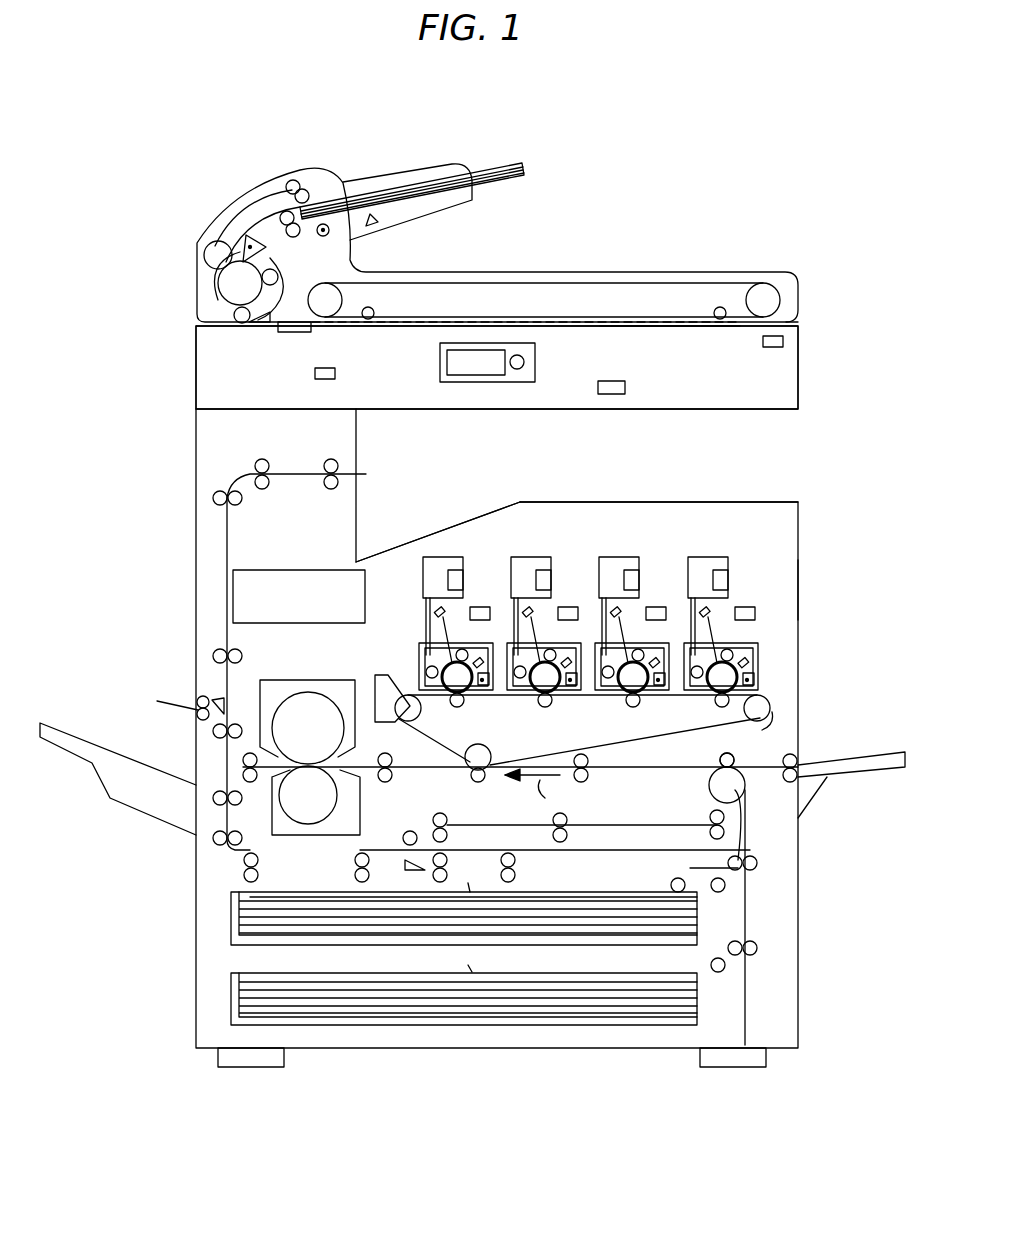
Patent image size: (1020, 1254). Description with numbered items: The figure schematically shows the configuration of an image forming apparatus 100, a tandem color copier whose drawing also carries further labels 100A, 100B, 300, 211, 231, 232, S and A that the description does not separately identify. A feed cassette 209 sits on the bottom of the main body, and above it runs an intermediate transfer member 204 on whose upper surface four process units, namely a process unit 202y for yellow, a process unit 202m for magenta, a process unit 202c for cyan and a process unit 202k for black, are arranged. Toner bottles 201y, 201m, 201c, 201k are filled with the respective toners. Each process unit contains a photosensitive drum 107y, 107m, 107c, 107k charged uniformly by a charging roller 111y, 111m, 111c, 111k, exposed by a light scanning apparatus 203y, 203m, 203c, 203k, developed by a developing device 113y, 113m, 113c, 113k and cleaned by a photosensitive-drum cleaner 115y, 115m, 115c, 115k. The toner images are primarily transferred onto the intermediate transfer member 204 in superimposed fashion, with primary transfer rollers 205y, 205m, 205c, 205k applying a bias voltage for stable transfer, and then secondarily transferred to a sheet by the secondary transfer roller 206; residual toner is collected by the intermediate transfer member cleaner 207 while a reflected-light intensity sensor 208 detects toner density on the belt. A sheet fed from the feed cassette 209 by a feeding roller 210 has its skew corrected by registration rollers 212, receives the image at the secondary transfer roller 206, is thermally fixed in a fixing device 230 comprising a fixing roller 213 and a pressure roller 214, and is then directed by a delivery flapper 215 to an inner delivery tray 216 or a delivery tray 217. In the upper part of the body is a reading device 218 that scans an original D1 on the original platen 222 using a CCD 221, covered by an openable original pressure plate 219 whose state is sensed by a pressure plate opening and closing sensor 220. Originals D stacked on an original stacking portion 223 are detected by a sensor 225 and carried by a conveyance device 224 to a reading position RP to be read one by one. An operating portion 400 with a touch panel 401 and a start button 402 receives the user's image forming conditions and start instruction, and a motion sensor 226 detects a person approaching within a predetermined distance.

The image forming apparatus 100 is at (738, 220).
The image forming unit 100A is at (798, 520).
The image forming unit 100B is at (785, 578).
The reading device 218 is at (798, 386).
The conveyance device 224 is at (205, 215).
The original stacking portion 223 is at (466, 165).
The originals D is at (425, 185).
The sensor 225 is at (372, 222).
The original D1 is at (465, 320).
The reading position RP is at (320, 338).
The original pressure plate 219 is at (798, 322).
The pressure plate opening and closing sensor 220 is at (783, 342).
The CCD 221 is at (320, 373).
The original platen 222 is at (662, 328).
The motion sensor 226 is at (615, 394).
The operating portion 400 is at (440, 362).
The touch panel 401 is at (480, 376).
The start button 402 is at (524, 361).
The controller unit 300 is at (275, 568).
The inner delivery tray 216 is at (418, 540).
The delivery flapper 215 is at (222, 700).
The fixing device 230 is at (312, 678).
The fixing roller 213 is at (300, 700).
The pressure roller 214 is at (330, 808).
The intermediate transfer member cleaner 207 is at (385, 672).
The intermediate transfer member 204 is at (412, 720).
The secondary transfer roller 206 is at (470, 760).
The reflected-light intensity sensor 208 is at (770, 706).
The registration rollers 212 is at (588, 768).
The discharge roller 232 is at (797, 760).
The discharge tray 211 is at (850, 770).
The delivery tray 217 is at (152, 815).
The feeding roller 210 is at (670, 885).
The feed cassette 209 is at (231, 922).
The sheet S is at (473, 921).
The conveyance roller 231 is at (735, 768).
The rotation direction A is at (532, 791).
The toner bottle 201y is at (423, 578).
The toner bottle 201m is at (520, 557).
The toner bottle 201c is at (610, 557).
The toner bottle 201k is at (710, 557).
The process unit 202y is at (419, 668).
The process unit 202m is at (578, 640).
The process unit 202c is at (666, 640).
The process unit 202k is at (758, 650).
The light scanning apparatus 203y is at (480, 605).
The light scanning apparatus 203m is at (568, 605).
The light scanning apparatus 203c is at (656, 605).
The light scanning apparatus 203k is at (755, 613).
The charging roller 111y is at (460, 660).
The charging roller 111m is at (548, 660).
The charging roller 111c is at (636, 660).
The charging roller 111k is at (727, 660).
The photosensitive drum 107y is at (480, 643).
The photosensitive drum 107m is at (565, 643).
The photosensitive drum 107c is at (655, 643).
The photosensitive drum 107k is at (745, 643).
The developing device 113y is at (434, 680).
The developing device 113m is at (523, 680).
The developing device 113c is at (611, 680).
The developing device 113k is at (700, 680).
The photosensitive-drum cleaner 115y is at (485, 688).
The photosensitive-drum cleaner 115m is at (574, 688).
The photosensitive-drum cleaner 115c is at (662, 688).
The photosensitive-drum cleaner 115k is at (756, 679).
The primary transfer roller 205y is at (462, 708).
The primary transfer roller 205m is at (552, 708).
The primary transfer roller 205c is at (640, 708).
The primary transfer roller 205k is at (729, 708).